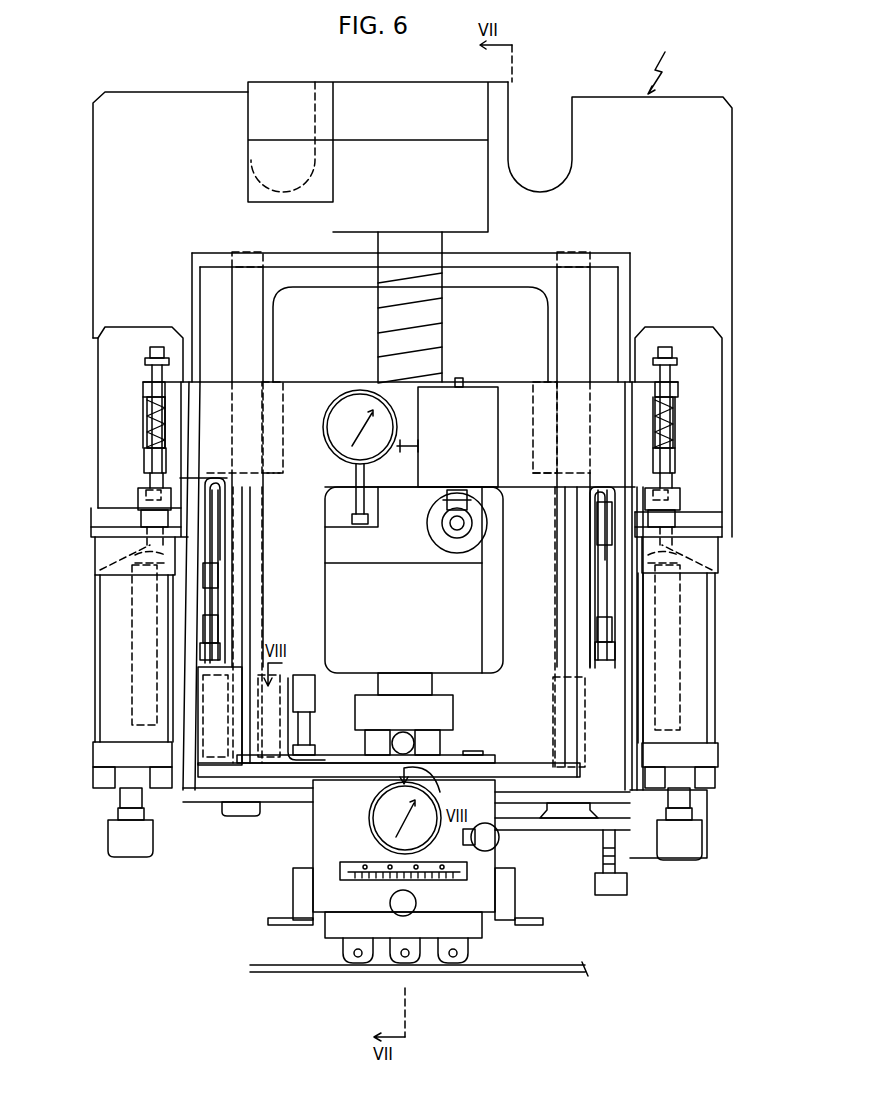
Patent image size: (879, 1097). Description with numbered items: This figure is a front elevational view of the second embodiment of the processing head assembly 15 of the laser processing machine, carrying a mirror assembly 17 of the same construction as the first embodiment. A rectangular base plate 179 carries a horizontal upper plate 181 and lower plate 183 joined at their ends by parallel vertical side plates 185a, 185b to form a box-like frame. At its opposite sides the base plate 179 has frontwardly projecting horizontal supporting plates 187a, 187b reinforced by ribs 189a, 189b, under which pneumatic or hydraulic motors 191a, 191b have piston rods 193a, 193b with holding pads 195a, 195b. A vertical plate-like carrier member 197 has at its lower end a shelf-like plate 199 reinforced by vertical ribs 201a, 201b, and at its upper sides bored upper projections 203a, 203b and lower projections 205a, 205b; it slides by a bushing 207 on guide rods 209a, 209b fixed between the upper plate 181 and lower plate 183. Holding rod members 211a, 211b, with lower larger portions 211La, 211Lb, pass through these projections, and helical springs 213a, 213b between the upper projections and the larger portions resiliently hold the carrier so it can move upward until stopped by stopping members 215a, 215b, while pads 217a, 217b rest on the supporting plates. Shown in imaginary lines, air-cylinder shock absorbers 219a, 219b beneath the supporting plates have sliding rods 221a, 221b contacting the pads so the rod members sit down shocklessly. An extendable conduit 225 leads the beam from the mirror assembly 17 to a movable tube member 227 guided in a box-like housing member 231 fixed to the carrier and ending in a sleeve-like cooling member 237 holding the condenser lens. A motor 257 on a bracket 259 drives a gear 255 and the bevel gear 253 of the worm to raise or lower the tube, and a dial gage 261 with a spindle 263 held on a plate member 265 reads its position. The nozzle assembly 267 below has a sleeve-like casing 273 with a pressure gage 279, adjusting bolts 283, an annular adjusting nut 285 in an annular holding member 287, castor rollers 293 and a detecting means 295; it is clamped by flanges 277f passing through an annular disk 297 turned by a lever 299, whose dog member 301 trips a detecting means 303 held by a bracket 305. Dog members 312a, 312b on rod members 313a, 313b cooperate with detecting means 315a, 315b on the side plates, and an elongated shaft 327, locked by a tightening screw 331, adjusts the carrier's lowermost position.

The processing head assembly 15 is at (662, 61).
The mirror assembly 17 is at (417, 183).
The base plate 179 is at (732, 157).
The upper plate 181 is at (478, 262).
The lower plate 183 is at (205, 802).
The side plate 185a is at (632, 275).
The side plate 185b is at (190, 272).
The horizontal supporting plate 187a is at (722, 528).
The horizontal supporting plate 187b is at (140, 540).
The rib 189a is at (722, 452).
The rib 189b is at (147, 432).
The pneumatic or hydraulic motor 191a is at (700, 710).
The pneumatic or hydraulic motor 191b is at (100, 705).
The piston rod 193a is at (690, 798).
The piston rod 193b is at (120, 798).
The holding pad 195a is at (702, 850).
The holding pad 195b is at (110, 835).
The carrier member 197 is at (318, 380).
The shelf-like plate 199 is at (248, 802).
The vertical rib 201a is at (570, 584).
The vertical rib 201b is at (245, 622).
The upper projection 203a is at (678, 390).
The upper projection 203b is at (143, 386).
The lower projection 205a is at (672, 484).
The lower projection 205b is at (138, 498).
The bushing 207 is at (296, 384).
The guide rod 209a is at (583, 285).
The guide rod 209b is at (260, 283).
The holding rod member 211a is at (678, 352).
The holding rod member 211b is at (148, 352).
The lower larger portion 211La is at (673, 460).
The lower larger portion 211Lb is at (145, 460).
The helical spring 213a is at (673, 420).
The helical spring 213b is at (147, 410).
The stopping member 215a is at (662, 348).
The stopping member 215b is at (152, 348).
The pad 217a is at (680, 500).
The pad 217b is at (181, 515).
The shock absorber 219a is at (700, 655).
The shock absorber 219b is at (130, 680).
The sliding rod 221a is at (712, 560).
The sliding rod 221b is at (110, 572).
The extendable conduit 225 is at (445, 312).
The movable tube member 227 is at (396, 676).
The box-like housing member 231 is at (420, 634).
The sleeve-like cooling member 237 is at (440, 695).
The bevel gear 253 is at (462, 535).
The gear 255 is at (457, 490).
The motor 257 is at (482, 427).
The bracket 259 is at (378, 494).
The dial gage 261 is at (325, 432).
The spindle 263 is at (368, 522).
The plate member 265 is at (360, 563).
The nozzle assembly 267 is at (538, 903).
The sleeve-like casing 273 is at (350, 858).
The flange 277f is at (486, 755).
The pressure gage 279 is at (372, 812).
The adjusting bolts 283 is at (499, 840).
The annular adjusting nut 285 is at (448, 858).
The annular holding member 287 is at (340, 870).
The castor rollers 293 is at (456, 968).
The detecting means 295 is at (520, 927).
The annular disk 297 is at (330, 770).
The lever 299 is at (415, 745).
The dog member 301 is at (340, 716).
The detecting means 303 is at (305, 675).
The bracket 305 is at (292, 678).
The dog member 312a is at (598, 528).
The dog member 312b is at (215, 628).
The rod member 313a is at (598, 568).
The rod member 313b is at (215, 545).
The detecting means 315a is at (561, 577).
The detecting means 315b is at (240, 497).
The elongated shaft 327 is at (574, 830).
The tightening screw 331 is at (627, 885).